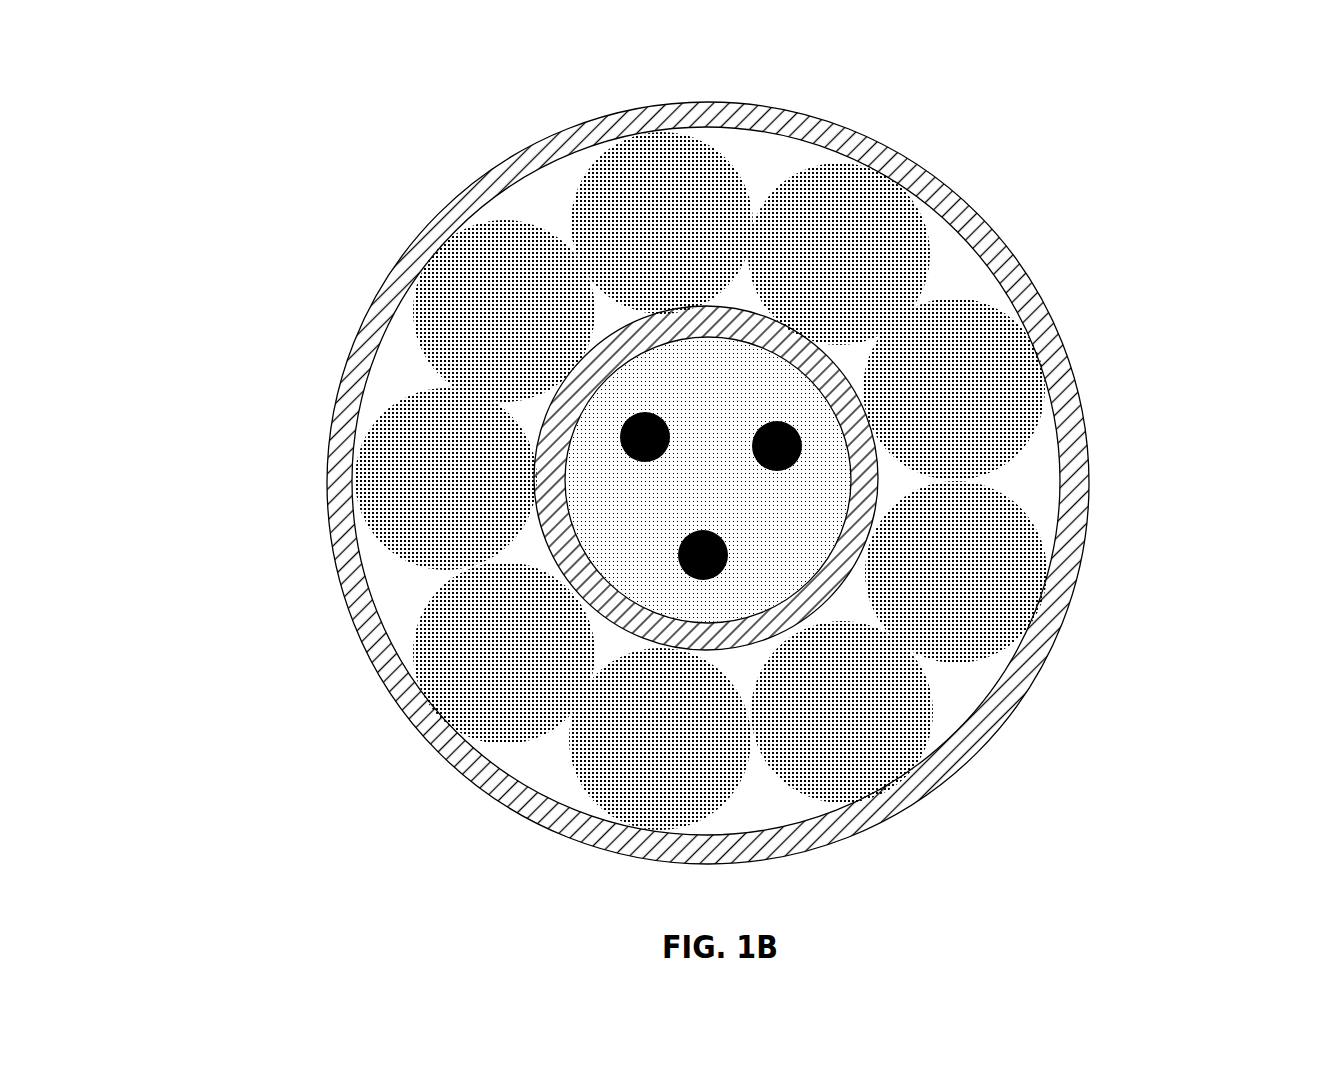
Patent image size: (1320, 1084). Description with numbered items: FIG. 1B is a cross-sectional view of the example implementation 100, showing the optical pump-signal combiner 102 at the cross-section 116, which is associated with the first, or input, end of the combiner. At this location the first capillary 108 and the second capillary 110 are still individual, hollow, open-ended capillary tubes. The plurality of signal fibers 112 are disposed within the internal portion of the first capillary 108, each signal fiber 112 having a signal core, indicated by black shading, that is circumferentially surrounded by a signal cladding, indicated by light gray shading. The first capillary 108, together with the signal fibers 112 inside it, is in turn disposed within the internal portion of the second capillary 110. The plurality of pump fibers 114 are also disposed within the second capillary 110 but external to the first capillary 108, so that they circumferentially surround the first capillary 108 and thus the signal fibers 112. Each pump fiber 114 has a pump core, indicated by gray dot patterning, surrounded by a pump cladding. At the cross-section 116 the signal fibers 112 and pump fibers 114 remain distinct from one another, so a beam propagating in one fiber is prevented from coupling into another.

The example implementation 100 is at (232, 69).
The optical pump-signal combiner 102 is at (1040, 258).
The first capillary 108 is at (617, 345).
The second capillary 110 is at (448, 208).
The signal fibers 112 is at (770, 553).
The pump fibers 114 is at (742, 185).
The cross-section 116 is at (784, 452).